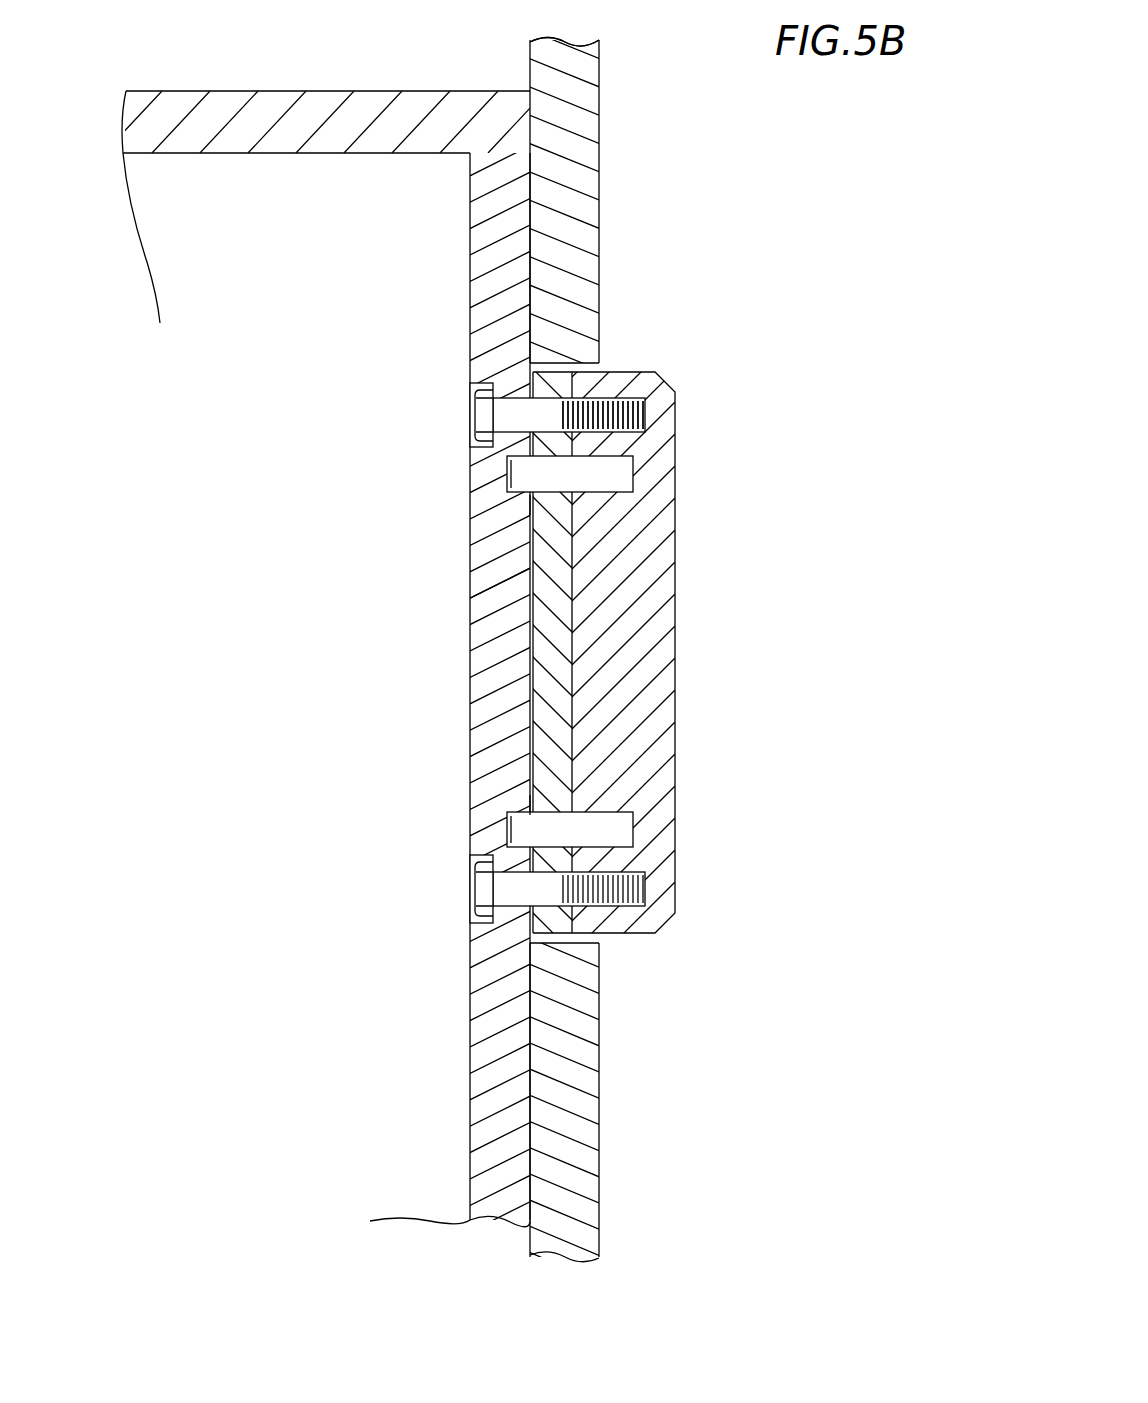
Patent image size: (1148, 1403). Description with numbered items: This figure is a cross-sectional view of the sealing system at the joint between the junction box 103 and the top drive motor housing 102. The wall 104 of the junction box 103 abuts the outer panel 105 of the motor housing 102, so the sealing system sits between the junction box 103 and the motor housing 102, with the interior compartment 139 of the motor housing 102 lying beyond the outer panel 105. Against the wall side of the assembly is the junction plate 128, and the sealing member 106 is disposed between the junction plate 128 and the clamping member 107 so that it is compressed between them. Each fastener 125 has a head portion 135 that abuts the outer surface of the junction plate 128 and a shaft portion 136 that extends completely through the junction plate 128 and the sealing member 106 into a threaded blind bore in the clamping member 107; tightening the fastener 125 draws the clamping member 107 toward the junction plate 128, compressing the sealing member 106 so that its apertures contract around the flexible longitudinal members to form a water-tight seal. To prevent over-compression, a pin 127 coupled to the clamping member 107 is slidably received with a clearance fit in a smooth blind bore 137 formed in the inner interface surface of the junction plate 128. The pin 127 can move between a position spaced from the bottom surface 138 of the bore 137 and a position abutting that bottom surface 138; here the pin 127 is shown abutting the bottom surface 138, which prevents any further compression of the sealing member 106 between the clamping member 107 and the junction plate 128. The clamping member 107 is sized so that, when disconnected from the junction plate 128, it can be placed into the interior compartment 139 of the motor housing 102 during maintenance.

The top drive motor housing 102 is at (620, 59).
The junction box 103 is at (313, 72).
The wall 104 is at (495, 205).
The outer panel 105 is at (570, 159).
The sealing member 106 is at (548, 627).
The clamping member 107 is at (610, 606).
The fastener 125 is at (521, 410).
The pin 127 is at (600, 473).
The junction plate 128 is at (497, 597).
The head portion 135 is at (485, 419).
The shaft portion 136 is at (628, 403).
The smooth blind bore 137 is at (528, 496).
The bottom surface 138 is at (508, 468).
The interior compartment 139 is at (740, 246).